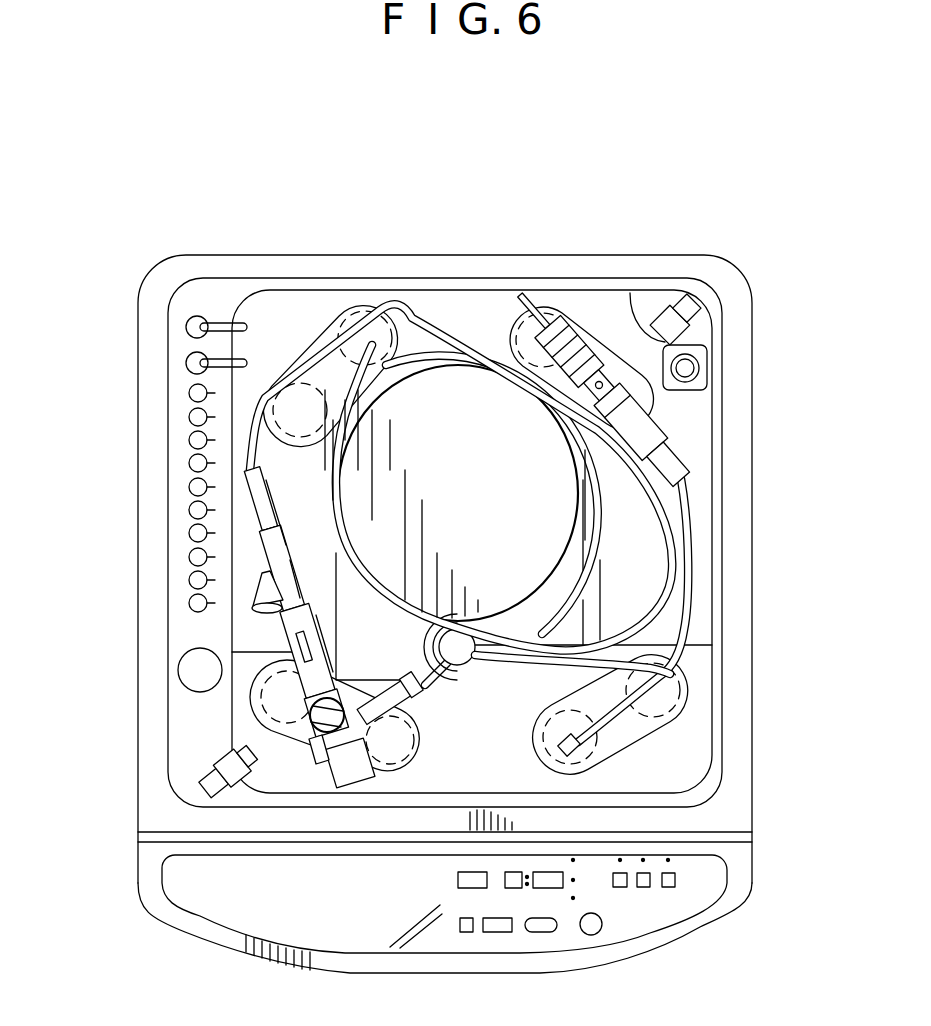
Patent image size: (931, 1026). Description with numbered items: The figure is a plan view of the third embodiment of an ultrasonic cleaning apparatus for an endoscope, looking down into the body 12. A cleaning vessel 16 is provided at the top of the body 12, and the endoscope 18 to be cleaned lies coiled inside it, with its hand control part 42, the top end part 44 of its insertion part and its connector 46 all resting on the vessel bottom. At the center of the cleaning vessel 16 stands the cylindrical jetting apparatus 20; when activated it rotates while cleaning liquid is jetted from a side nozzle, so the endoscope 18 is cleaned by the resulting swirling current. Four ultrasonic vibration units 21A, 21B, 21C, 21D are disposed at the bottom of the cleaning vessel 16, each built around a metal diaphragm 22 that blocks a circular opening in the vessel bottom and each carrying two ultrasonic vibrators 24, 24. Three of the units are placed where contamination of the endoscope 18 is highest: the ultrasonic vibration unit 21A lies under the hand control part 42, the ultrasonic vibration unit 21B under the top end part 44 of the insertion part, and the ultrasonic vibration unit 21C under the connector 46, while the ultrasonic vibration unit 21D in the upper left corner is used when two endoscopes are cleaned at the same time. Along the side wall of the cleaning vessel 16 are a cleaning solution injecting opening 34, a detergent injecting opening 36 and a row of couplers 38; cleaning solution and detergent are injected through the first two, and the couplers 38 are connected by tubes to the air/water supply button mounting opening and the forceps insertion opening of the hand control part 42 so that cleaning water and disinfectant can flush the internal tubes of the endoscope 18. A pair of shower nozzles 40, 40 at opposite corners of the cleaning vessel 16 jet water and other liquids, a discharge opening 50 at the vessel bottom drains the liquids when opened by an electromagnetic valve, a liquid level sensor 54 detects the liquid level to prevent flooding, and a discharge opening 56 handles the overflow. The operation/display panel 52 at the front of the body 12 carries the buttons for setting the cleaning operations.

The body 12 is at (515, 150).
The cleaning vessel 16 is at (485, 275).
The endoscope 18 is at (427, 313).
The jetting apparatus 20 is at (553, 518).
The ultrasonic vibration unit 21A is at (370, 775).
The ultrasonic vibration unit 21B is at (692, 702).
The ultrasonic vibration unit 21C is at (560, 305).
The ultrasonic vibration unit 21D is at (327, 325).
The diaphragm 22 is at (305, 350).
The ultrasonic vibrator 24 is at (372, 312).
The cleaning solution injecting opening 34 is at (188, 327).
The detergent injecting opening 36 is at (188, 363).
The couplers 38 is at (193, 487).
The shower nozzles 40 is at (692, 318).
The hand control part 42 is at (303, 763).
The top end part of the insertion part 44 is at (580, 752).
The connector 46 is at (603, 340).
The discharge opening 50 is at (450, 697).
The operation/display panel 52 is at (568, 928).
The liquid level sensor 54 is at (690, 368).
The discharge opening for the overflow 56 is at (178, 672).